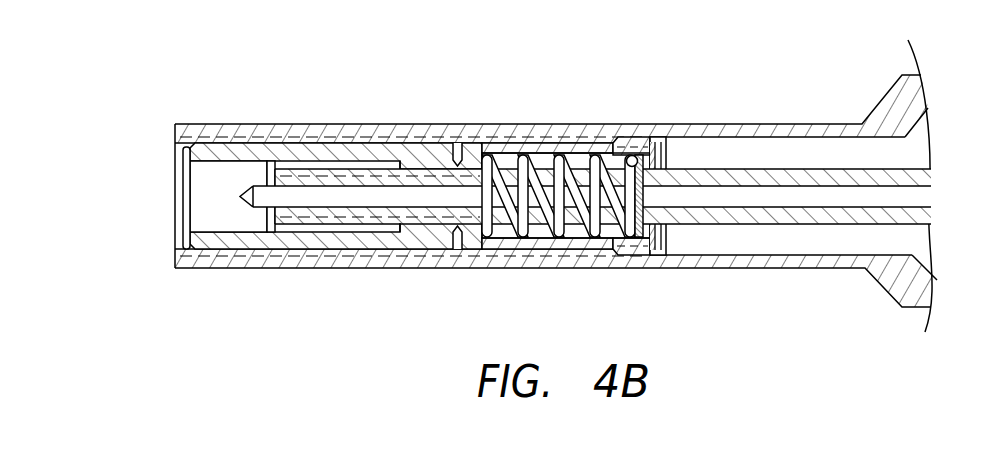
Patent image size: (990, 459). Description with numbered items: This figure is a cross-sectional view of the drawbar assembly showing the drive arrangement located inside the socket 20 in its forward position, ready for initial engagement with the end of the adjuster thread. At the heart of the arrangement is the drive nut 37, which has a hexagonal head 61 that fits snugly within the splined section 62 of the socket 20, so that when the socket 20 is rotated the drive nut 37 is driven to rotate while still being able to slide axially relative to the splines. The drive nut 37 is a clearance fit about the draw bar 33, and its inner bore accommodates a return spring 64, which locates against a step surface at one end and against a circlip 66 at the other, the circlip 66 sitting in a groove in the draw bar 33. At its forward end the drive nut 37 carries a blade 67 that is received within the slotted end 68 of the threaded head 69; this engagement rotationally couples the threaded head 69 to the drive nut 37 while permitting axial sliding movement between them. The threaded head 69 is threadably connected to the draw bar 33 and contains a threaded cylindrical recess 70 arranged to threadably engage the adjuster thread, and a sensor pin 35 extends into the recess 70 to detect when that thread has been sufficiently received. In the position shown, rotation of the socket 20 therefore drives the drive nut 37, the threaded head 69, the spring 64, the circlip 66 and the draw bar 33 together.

The socket 20 is at (737, 268).
The draw bar 33 is at (752, 168).
The sensor pin 35 is at (267, 180).
The drive nut 37 is at (540, 141).
The hexagonal head 61 is at (634, 147).
The splined section 62 is at (377, 250).
The return spring 64 is at (558, 228).
The circlip 66 is at (650, 140).
The blade 67 is at (447, 158).
The slotted end 68 is at (400, 163).
The threaded head 69 is at (184, 167).
The threaded cylindrical recess 70 is at (230, 218).